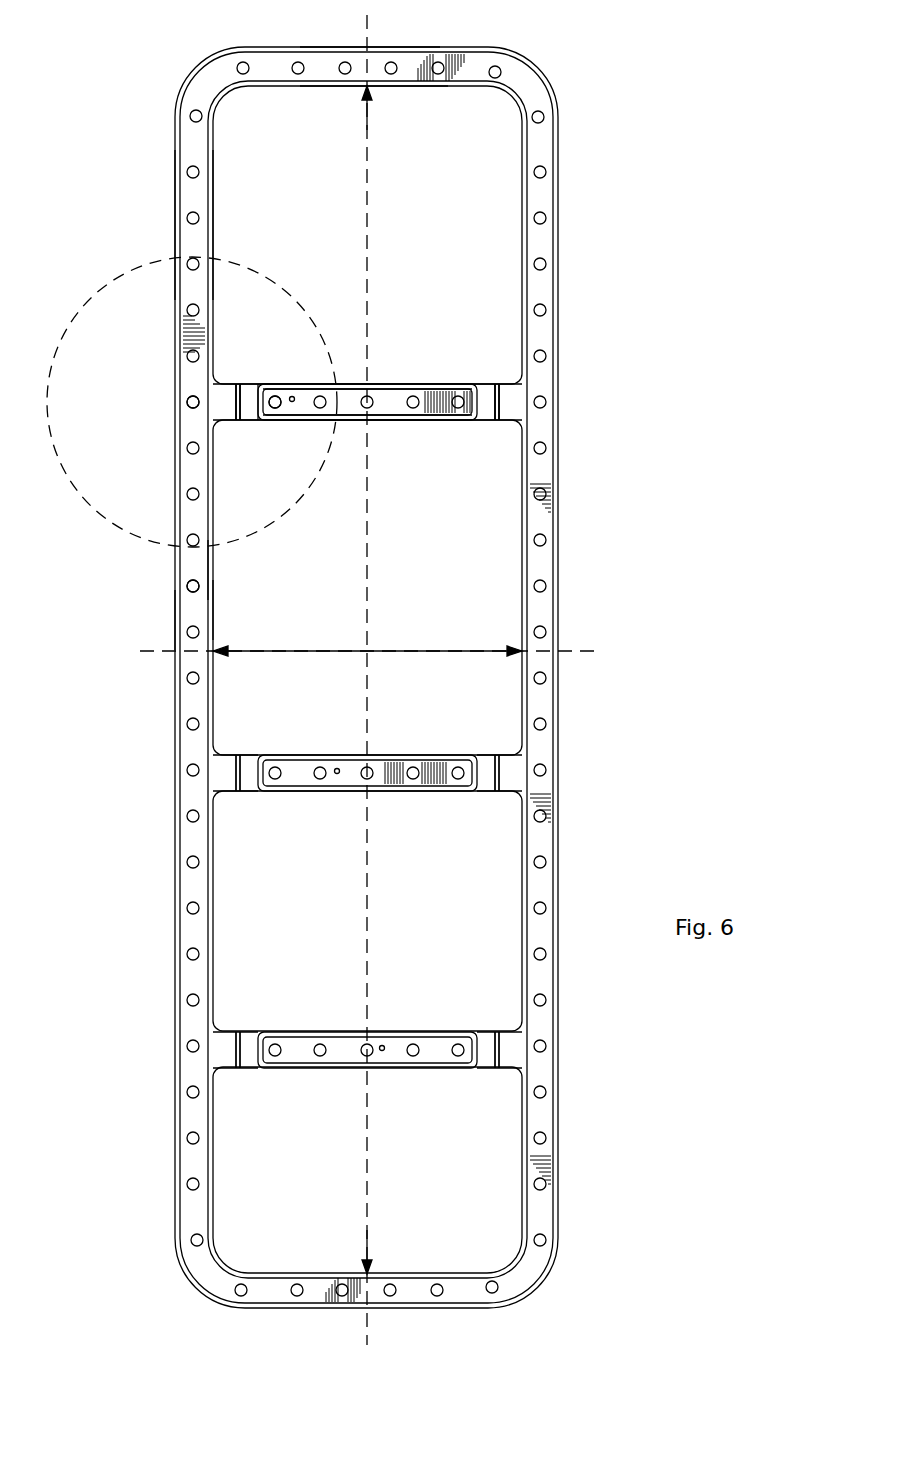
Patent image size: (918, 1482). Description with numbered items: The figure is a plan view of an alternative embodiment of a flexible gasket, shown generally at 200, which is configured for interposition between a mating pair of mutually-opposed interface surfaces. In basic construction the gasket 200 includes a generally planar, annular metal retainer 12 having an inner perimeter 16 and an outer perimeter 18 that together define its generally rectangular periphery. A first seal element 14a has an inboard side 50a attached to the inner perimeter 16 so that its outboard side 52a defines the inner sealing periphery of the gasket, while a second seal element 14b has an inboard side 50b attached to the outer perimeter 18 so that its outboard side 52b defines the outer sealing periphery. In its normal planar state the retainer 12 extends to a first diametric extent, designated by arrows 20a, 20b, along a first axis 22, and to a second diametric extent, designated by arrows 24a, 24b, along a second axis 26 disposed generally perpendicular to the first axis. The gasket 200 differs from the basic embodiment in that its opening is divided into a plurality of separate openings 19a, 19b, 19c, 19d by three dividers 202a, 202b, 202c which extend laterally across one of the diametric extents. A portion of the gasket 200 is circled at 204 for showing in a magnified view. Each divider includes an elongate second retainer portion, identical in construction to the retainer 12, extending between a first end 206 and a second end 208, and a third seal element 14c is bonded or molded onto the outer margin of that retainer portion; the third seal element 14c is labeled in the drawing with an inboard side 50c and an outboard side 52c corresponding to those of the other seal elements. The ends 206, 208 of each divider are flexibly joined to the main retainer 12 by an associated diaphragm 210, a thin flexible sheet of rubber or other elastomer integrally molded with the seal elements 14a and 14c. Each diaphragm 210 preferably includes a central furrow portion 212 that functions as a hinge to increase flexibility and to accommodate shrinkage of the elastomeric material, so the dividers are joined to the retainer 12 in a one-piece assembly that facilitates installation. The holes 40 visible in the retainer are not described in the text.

The retainer 12 is at (522, 93).
The first seal element 14a is at (448, 87).
The second seal element 14b is at (440, 47).
The third seal element 14c is at (378, 384).
The inner perimeter 16 is at (213, 195).
The outer perimeter 18 is at (178, 170).
The opening 19a is at (428, 207).
The opening 19b is at (420, 572).
The opening 19c is at (428, 909).
The opening 19d is at (428, 1184).
The first diametric extent arrow 20a is at (240, 652).
The first diametric extent arrow 20b is at (488, 651).
The first axis 22 is at (565, 651).
The second diametric extent arrow 24a is at (367, 110).
The second diametric extent arrow 24b is at (372, 1242).
The second axis 26 is at (372, 1318).
The mounting hole 40 is at (199, 383).
The inboard side of first seal element 50a is at (206, 570).
The inboard side of second seal element 50b is at (190, 588).
The crossbar lower edge 50c is at (375, 421).
The outboard side of first seal element 52a is at (213, 607).
The outboard side of second seal element 52b is at (176, 620).
The crossbar inner edge 52c is at (405, 421).
The gasket 200 is at (757, 185).
The divider 202a is at (480, 300).
The divider 202b is at (420, 722).
The divider 202c is at (465, 1000).
The portion of the gasket 204 is at (83, 305).
The first end 206 is at (262, 385).
The second end 208 is at (470, 385).
The diaphragm 210 is at (252, 421).
The central furrow portion 212 is at (232, 402).